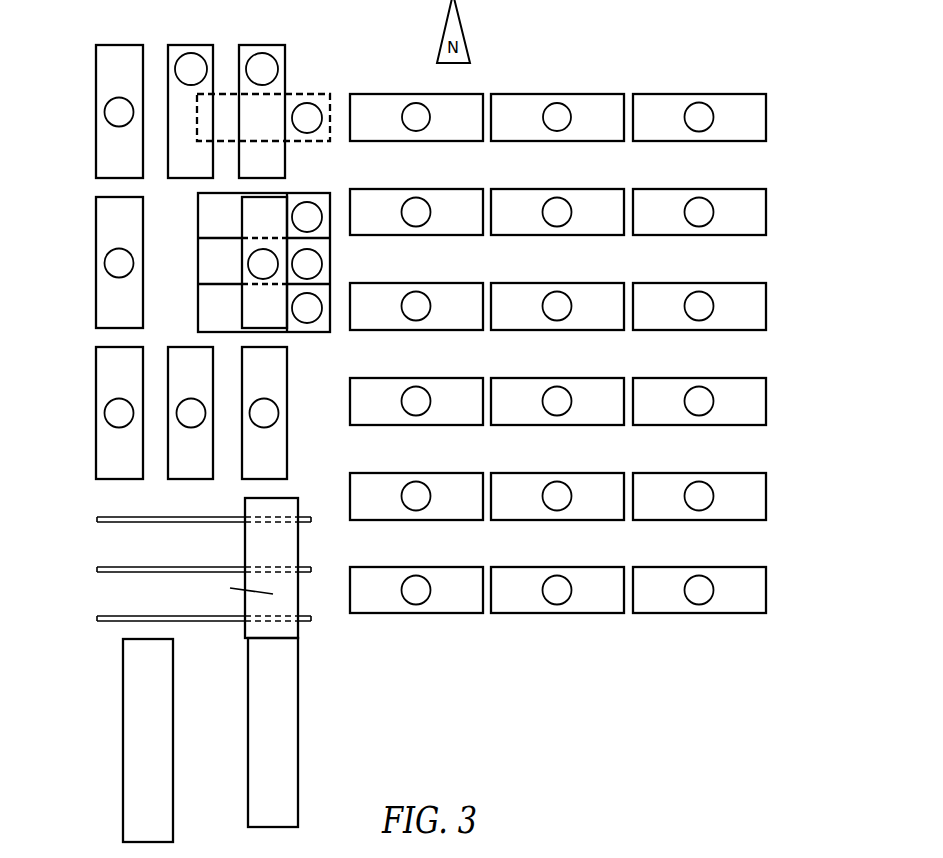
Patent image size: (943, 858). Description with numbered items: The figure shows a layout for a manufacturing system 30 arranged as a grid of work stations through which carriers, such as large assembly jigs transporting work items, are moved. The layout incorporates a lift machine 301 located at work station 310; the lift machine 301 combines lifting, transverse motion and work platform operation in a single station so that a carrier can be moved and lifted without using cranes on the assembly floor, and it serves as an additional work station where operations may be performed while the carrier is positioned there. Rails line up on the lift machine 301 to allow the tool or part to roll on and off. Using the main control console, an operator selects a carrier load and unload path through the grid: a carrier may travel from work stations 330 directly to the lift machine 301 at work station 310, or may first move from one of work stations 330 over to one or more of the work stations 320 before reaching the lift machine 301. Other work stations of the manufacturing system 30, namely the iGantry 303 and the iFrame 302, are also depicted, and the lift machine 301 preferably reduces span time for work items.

The manufacturing system 30 is at (781, 94).
The lift machine 301 is at (302, 587).
The iFrame 302 is at (298, 717).
The iGantry 303 is at (123, 745).
The work station 310 is at (83, 500).
The work stations 320 is at (82, 44).
The work stations 330 is at (350, 624).